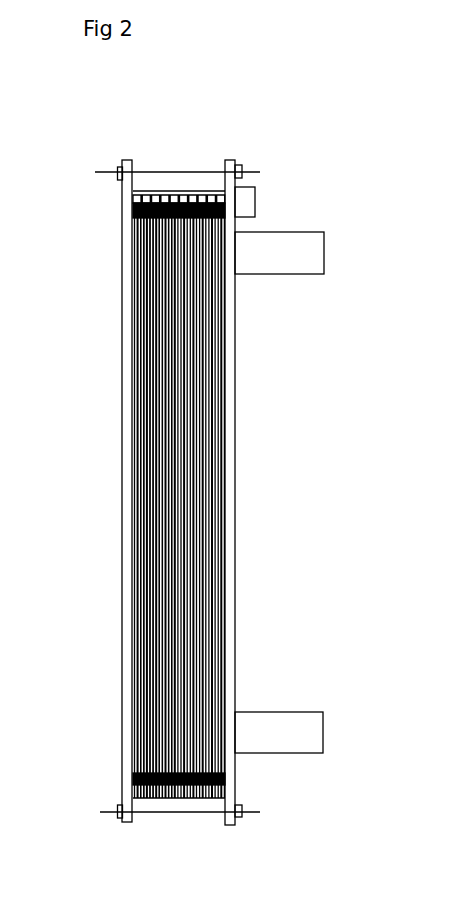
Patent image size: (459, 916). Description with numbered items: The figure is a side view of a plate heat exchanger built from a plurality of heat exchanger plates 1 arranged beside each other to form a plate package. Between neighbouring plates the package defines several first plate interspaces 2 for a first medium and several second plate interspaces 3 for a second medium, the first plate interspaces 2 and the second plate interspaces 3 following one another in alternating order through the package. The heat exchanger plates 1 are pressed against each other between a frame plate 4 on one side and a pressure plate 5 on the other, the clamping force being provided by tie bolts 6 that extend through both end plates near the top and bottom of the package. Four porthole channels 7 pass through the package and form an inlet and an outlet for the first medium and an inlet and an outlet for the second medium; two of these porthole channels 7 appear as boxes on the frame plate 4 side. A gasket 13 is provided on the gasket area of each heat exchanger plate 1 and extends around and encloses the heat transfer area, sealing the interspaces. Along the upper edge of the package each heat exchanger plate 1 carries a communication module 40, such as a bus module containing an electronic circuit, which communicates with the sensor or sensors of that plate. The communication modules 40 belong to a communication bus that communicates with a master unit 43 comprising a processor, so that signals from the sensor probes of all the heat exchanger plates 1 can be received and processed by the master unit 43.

The heat exchanger plates 1 is at (148, 490).
The first plate interspaces 2 is at (160, 552).
The second plate interspaces 3 is at (168, 600).
The frame plate 4 is at (230, 370).
The pressure plate 5 is at (127, 377).
The tie bolts 6 is at (262, 173).
The porthole channels 7 is at (302, 250).
The gasket 13 is at (187, 800).
The communication module 40 is at (187, 200).
The master unit 43 is at (247, 202).